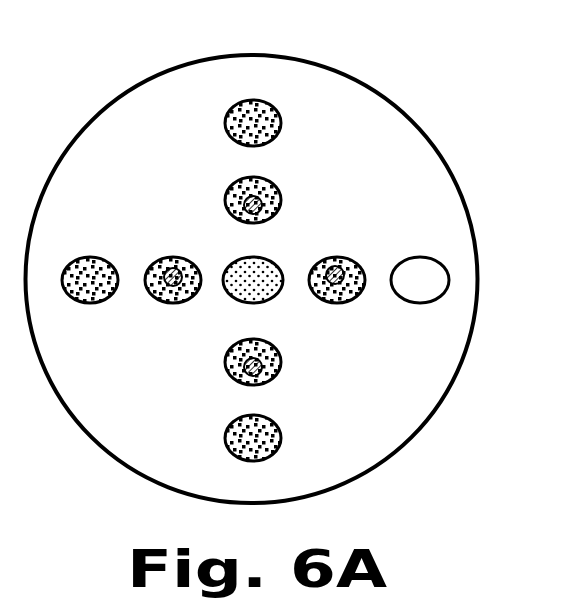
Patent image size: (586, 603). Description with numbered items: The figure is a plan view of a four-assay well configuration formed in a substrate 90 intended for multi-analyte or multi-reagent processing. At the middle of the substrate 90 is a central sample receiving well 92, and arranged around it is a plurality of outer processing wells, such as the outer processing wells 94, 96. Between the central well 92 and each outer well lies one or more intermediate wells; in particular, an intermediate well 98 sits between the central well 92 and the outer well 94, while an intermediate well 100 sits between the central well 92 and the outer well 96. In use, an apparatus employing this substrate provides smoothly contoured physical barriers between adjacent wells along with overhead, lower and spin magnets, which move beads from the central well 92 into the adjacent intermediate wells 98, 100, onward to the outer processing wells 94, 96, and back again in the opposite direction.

The substrate 90 is at (384, 88).
The central sample receiving well 92 is at (282, 272).
The outer processing well 94 is at (283, 118).
The outer processing well 96 is at (422, 303).
The intermediate well 98 is at (227, 197).
The intermediate well 100 is at (363, 263).